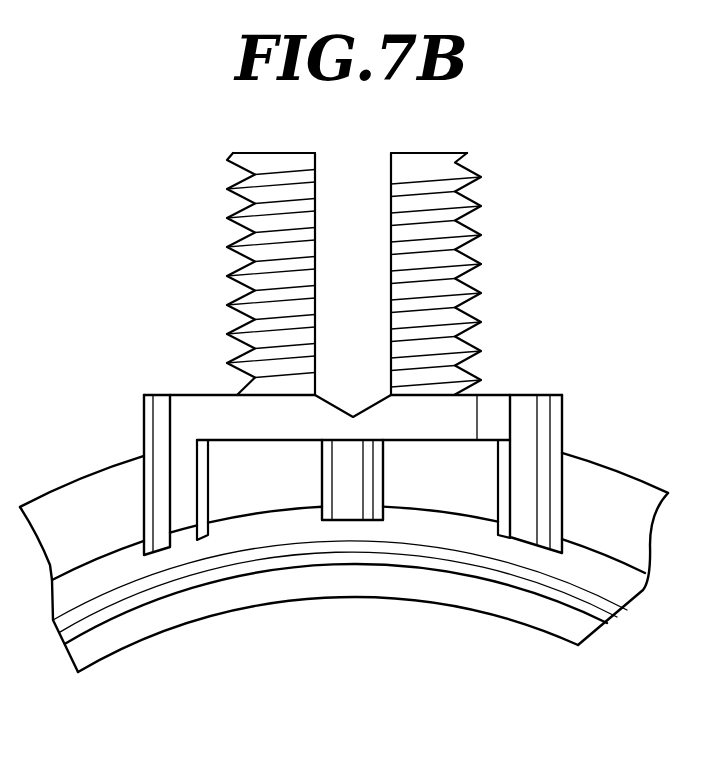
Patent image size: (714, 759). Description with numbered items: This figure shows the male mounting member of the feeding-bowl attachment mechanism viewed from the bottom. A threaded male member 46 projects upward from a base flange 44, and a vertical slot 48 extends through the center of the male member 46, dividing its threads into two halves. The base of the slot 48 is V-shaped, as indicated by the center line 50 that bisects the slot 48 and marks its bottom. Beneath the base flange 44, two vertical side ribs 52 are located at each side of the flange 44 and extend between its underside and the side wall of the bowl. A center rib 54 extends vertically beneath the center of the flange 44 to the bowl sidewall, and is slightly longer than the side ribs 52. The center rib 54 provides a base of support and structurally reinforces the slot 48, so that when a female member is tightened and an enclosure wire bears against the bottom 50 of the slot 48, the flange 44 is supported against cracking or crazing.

The base flange 44 is at (493, 394).
The male member 46 is at (468, 194).
The vertical slot 48 is at (390, 178).
The center line / bottom of slot 50 is at (352, 417).
The vertical side ribs 52 is at (210, 497).
The center rib 54 is at (385, 467).